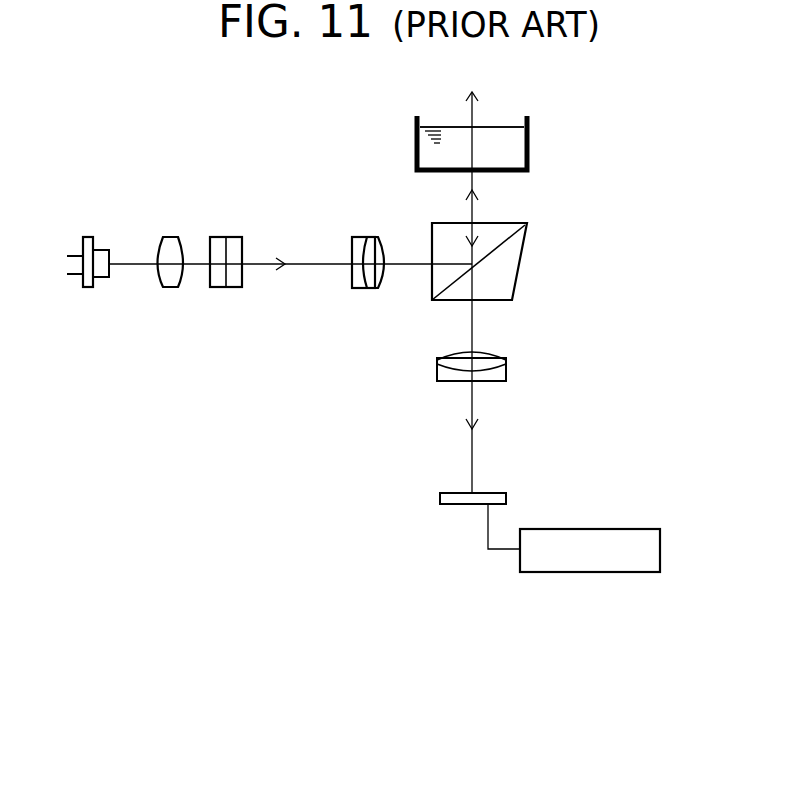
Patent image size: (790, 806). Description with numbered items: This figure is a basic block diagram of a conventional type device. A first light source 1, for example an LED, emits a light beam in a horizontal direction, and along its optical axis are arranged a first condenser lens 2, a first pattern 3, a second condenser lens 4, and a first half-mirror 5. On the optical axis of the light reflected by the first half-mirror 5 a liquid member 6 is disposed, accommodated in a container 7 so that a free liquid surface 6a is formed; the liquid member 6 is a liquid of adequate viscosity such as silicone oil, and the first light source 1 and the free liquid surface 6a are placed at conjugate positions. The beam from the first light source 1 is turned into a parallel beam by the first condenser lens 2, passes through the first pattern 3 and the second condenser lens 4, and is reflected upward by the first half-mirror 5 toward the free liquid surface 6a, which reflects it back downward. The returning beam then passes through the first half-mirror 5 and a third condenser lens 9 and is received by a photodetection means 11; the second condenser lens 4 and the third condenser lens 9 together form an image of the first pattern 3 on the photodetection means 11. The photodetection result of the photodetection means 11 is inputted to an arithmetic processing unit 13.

The first light source 1 is at (87, 237).
The first condenser lens 2 is at (170, 237).
The first pattern 3 is at (225, 237).
The second condenser lens 4 is at (372, 237).
The first half-mirror 5 is at (520, 280).
The liquid member 6 is at (430, 150).
The free liquid surface 6a is at (490, 126).
The container 7 is at (530, 148).
The third condenser lens 9 is at (437, 372).
The photodetection means 11 is at (440, 498).
The arithmetic processing unit 13 is at (625, 529).